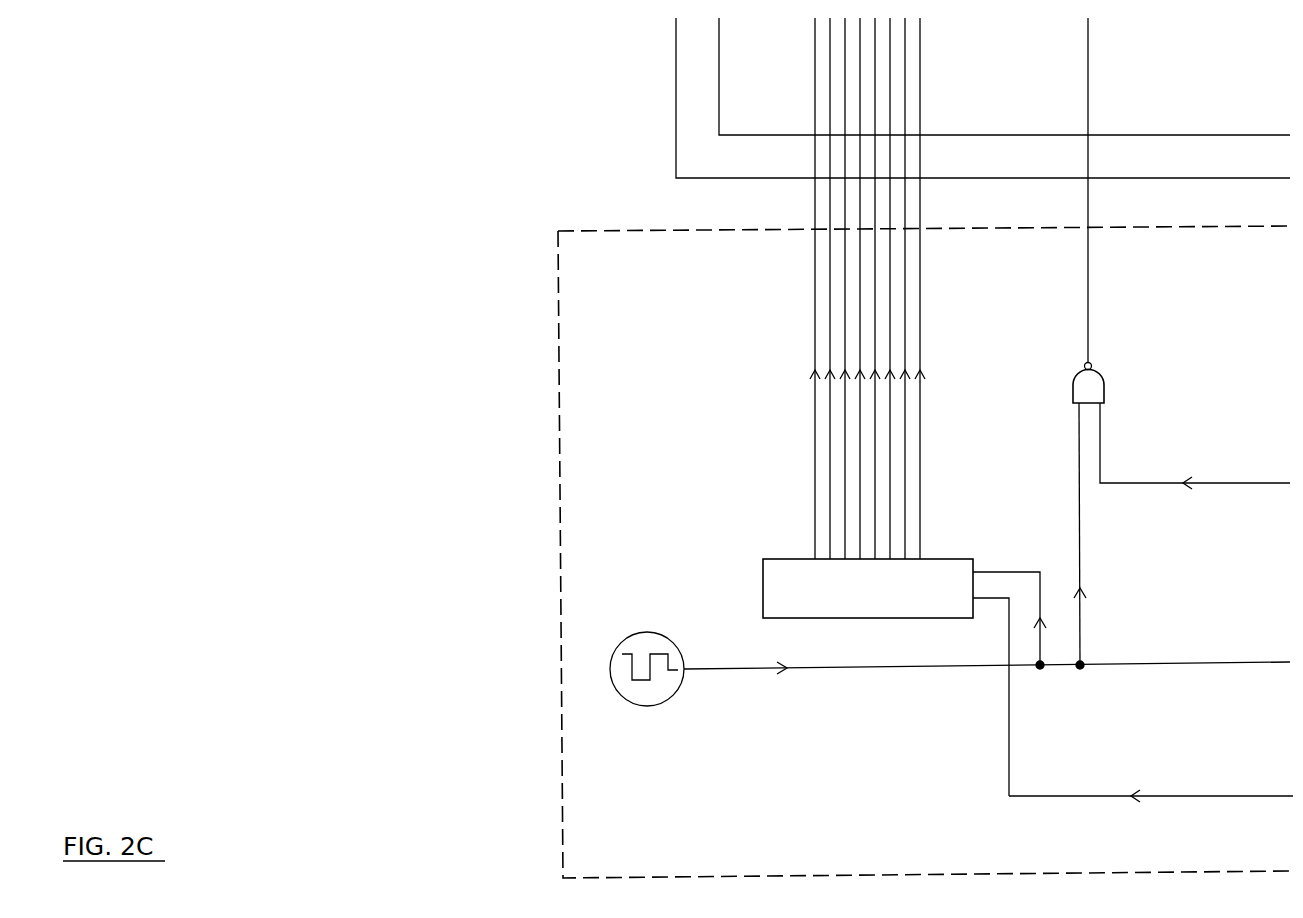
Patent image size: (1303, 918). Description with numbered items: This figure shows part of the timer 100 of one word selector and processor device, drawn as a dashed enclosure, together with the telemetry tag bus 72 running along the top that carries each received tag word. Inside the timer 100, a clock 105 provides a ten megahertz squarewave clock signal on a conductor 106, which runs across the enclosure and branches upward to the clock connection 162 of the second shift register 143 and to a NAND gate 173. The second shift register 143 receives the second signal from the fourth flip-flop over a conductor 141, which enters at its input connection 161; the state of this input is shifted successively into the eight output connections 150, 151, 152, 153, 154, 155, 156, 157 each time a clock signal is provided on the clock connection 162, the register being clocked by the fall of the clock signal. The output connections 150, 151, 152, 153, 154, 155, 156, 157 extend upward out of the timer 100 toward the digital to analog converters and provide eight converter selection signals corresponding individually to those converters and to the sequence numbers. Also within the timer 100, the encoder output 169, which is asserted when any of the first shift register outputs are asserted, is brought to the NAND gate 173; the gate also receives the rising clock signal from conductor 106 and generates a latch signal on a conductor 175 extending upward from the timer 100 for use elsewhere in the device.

The telemetry tag bus 72 is at (1117, 141).
The timer 100 is at (546, 363).
The clock 105 is at (640, 706).
The conductor 106 is at (795, 672).
The conductor 141 is at (1157, 794).
The second shift register 143 is at (824, 626).
The output connection 150 is at (920, 28).
The output connection 151 is at (905, 43).
The output connection 152 is at (890, 53).
The output connection 153 is at (875, 63).
The output connection 154 is at (860, 77).
The output connection 155 is at (845, 90).
The output connection 156 is at (830, 103).
The output connection 157 is at (815, 118).
The input connection 161 is at (975, 603).
The clock connection 162 is at (977, 571).
The output 169 is at (1150, 482).
The NAND gate 173 is at (1095, 380).
The conductor 175 is at (1090, 262).